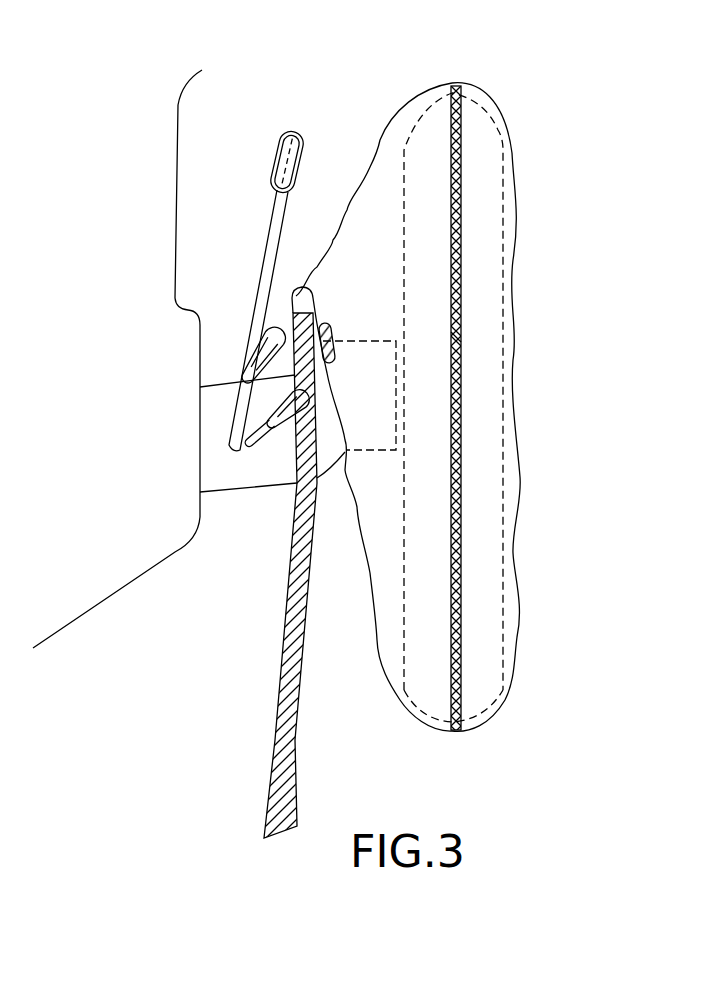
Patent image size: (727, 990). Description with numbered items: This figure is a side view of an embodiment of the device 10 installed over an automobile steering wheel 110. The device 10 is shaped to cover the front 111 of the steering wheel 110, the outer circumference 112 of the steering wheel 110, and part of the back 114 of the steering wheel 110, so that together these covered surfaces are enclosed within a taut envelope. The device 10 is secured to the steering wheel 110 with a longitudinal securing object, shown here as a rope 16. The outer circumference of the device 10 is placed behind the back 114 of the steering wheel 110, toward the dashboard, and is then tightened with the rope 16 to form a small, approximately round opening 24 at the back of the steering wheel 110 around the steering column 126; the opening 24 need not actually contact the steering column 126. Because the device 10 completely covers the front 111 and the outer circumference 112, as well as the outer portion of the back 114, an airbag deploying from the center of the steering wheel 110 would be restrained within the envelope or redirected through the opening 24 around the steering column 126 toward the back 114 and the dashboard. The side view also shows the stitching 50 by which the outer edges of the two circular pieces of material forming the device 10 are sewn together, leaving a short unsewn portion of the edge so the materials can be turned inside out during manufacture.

The device 10 is at (461, 407).
The rope 16 is at (292, 620).
The opening 24 is at (267, 278).
The stitching 50 is at (458, 337).
The steering wheel 110 is at (477, 672).
The front of the steering wheel 111 is at (503, 192).
The outer circumference of the steering wheel 112 is at (441, 96).
The back of the steering wheel 114 is at (405, 160).
The steering column 126 is at (240, 473).